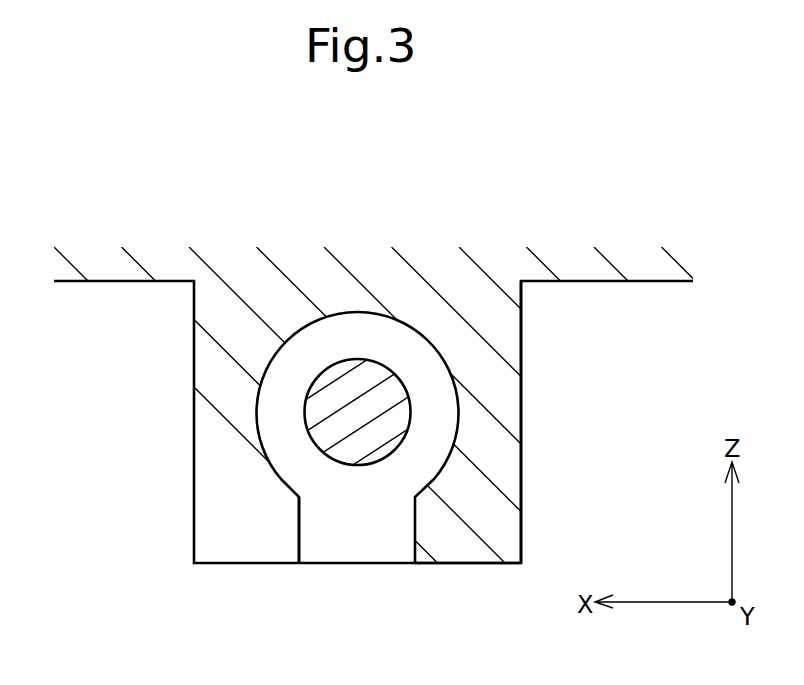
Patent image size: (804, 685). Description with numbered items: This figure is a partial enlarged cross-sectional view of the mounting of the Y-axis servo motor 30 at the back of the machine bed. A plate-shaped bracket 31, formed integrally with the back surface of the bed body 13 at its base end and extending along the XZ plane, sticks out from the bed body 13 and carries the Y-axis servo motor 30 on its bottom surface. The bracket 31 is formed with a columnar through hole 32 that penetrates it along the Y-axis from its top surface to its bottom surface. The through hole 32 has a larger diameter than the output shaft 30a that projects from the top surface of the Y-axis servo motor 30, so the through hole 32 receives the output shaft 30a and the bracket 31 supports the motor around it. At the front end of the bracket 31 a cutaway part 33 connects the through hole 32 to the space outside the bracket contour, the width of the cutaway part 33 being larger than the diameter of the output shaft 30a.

The bed body 13 is at (678, 282).
The Y-axis servo motor 30 is at (374, 564).
The output shaft 30a is at (407, 387).
The bracket 31 is at (478, 564).
The through hole 32 is at (452, 459).
The cutaway part 33 is at (298, 535).